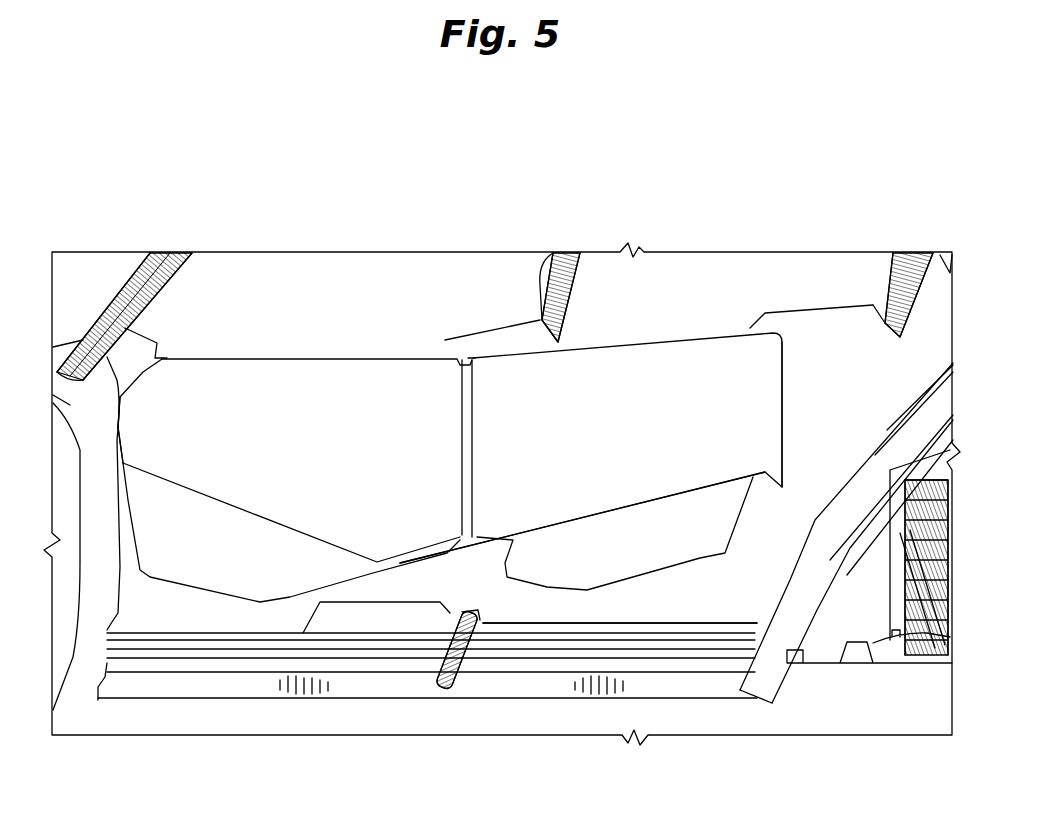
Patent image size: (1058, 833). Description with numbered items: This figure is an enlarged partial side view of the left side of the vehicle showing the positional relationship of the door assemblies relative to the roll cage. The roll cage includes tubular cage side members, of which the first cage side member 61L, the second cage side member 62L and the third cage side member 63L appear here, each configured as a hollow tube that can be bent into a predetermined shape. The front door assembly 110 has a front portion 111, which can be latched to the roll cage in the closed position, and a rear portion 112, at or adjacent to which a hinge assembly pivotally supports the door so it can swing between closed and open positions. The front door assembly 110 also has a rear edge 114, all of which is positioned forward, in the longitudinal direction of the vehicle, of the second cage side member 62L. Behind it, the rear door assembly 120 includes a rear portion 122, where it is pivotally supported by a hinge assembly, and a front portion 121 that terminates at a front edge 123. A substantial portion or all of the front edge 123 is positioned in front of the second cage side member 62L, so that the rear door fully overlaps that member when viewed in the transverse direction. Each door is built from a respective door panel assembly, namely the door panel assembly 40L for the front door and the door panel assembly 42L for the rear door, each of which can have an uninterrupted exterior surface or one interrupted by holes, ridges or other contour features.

The door panel assembly 40L is at (237, 488).
The door panel assembly 42L is at (625, 492).
The cage side member 61L is at (165, 265).
The second cage side member 62L is at (567, 262).
The cage side member 63L is at (913, 267).
The front door assembly 110 is at (303, 370).
The front portion 111 is at (133, 407).
The rear portion 112 is at (450, 453).
The rear edge 114 is at (468, 410).
The rear door assembly 120 is at (665, 357).
The front portion 121 is at (483, 453).
The rear portion 122 is at (772, 397).
The front edge 123 is at (472, 437).